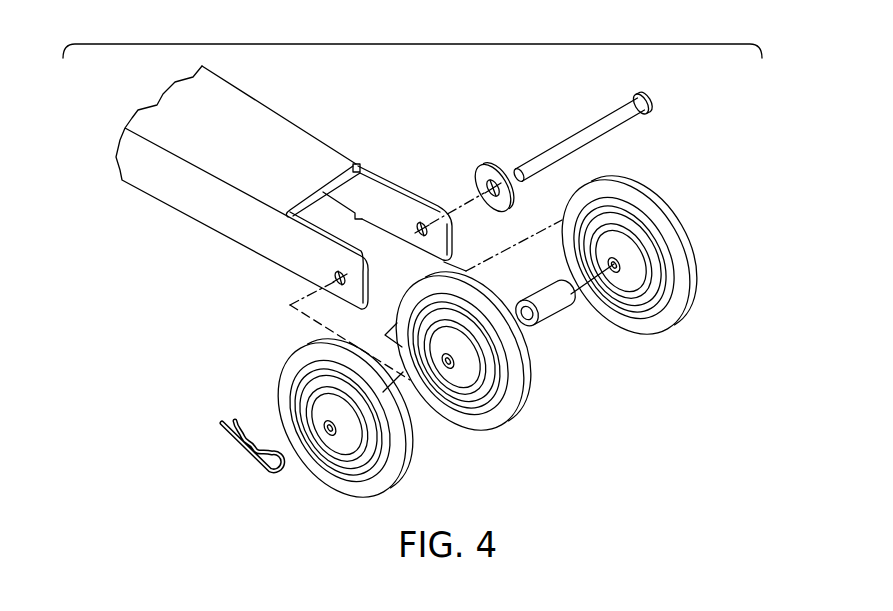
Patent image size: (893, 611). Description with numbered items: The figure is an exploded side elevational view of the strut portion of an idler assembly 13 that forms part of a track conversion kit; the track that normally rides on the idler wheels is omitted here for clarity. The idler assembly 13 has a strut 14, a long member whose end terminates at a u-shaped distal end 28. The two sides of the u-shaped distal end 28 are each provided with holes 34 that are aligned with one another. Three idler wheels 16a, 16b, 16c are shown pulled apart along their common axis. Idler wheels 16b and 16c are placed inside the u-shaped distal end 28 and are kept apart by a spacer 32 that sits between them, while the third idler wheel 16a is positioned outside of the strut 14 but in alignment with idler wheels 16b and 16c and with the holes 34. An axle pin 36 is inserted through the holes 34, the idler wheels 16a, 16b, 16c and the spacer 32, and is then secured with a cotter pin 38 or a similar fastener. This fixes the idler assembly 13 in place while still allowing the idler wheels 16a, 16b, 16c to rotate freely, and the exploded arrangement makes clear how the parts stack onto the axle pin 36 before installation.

The idler assembly 13 is at (446, 305).
The strut 14 is at (228, 102).
The idler wheel 16a is at (406, 456).
The idler wheel 16b is at (526, 378).
The idler wheel 16c is at (694, 284).
The u-shaped distal end 28 is at (266, 298).
The spacer 32 is at (560, 316).
The holes 34 is at (412, 240).
The axle pin 36 is at (566, 137).
The cotter pin 38 is at (252, 457).